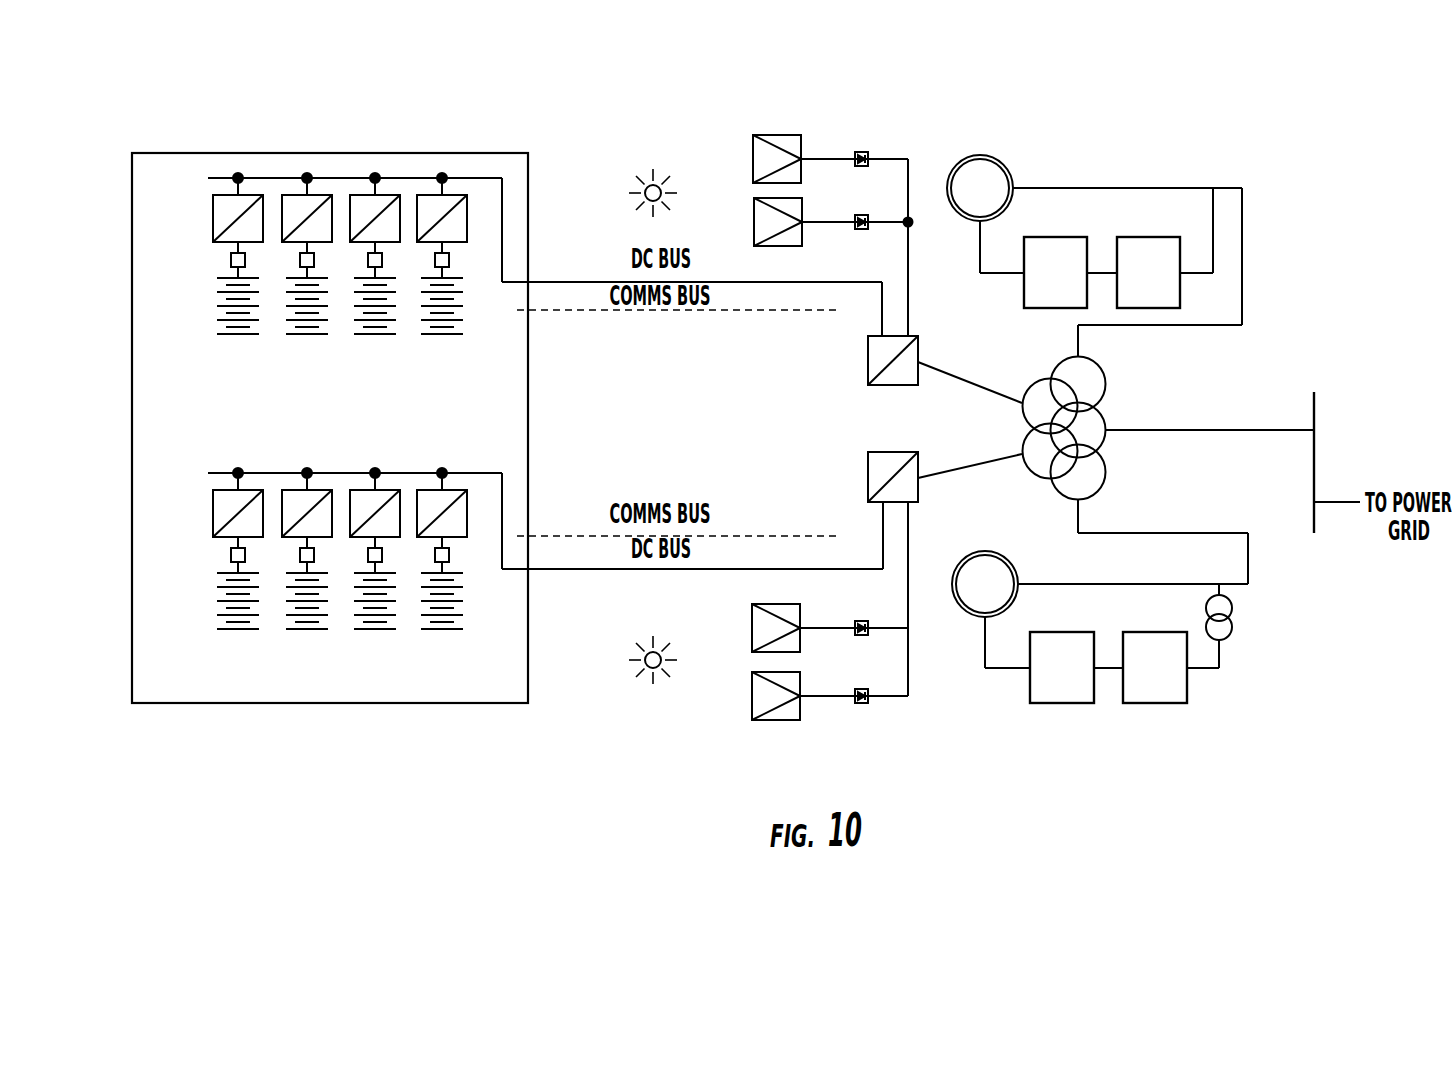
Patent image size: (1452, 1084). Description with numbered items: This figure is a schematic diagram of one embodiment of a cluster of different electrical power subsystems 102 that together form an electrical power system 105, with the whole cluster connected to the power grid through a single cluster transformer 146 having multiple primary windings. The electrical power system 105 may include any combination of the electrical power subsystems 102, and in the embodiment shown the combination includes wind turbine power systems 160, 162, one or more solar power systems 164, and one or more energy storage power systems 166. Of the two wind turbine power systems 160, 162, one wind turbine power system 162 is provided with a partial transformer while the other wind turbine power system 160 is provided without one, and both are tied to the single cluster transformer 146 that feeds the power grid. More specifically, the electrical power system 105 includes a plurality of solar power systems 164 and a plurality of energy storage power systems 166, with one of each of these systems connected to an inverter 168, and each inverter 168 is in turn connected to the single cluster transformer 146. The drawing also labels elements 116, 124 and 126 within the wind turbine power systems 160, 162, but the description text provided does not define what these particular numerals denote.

The electrical power subsystem 102 is at (773, 110).
The electrical power system 105 is at (1310, 185).
The doubly fed induction generator 116 is at (956, 160).
The rotor side converter 124 is at (1059, 470).
The line side converter 126 is at (1152, 470).
The single cluster transformer 146 is at (1112, 387).
The wind turbine power system 160 is at (1128, 188).
The wind turbine power system 162 is at (1206, 670).
The solar power system 164 is at (753, 158).
The energy storage power system 166 is at (130, 587).
The inverter 168 is at (866, 362).